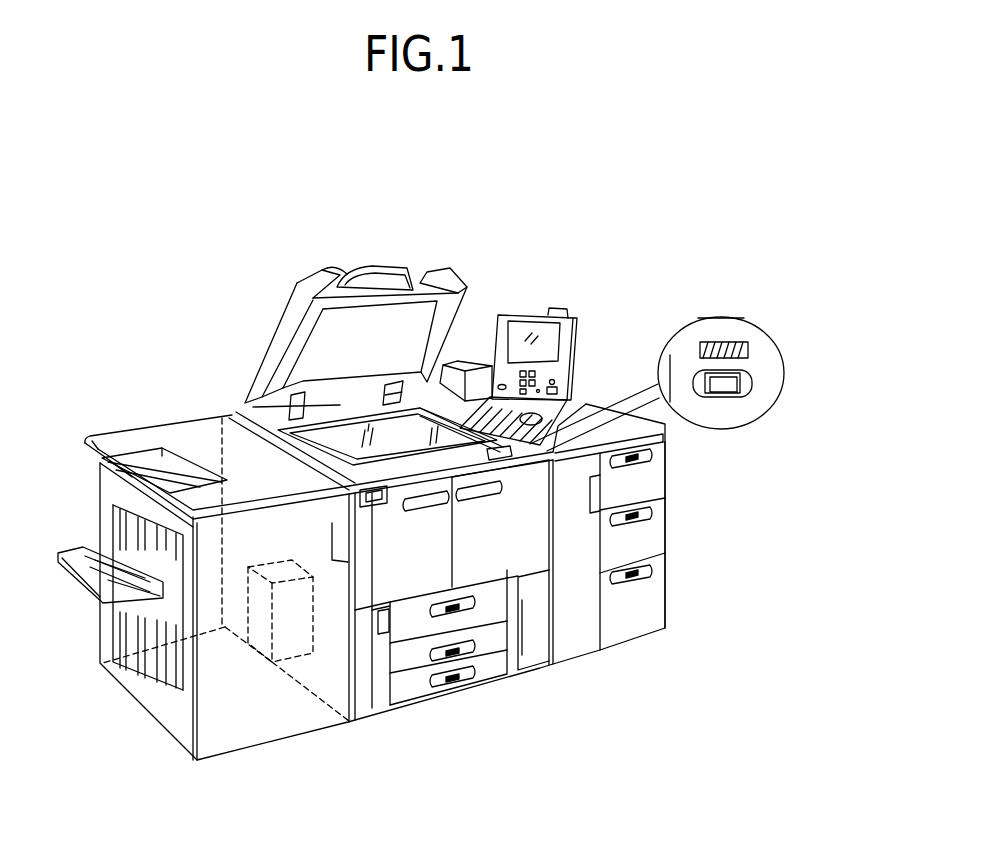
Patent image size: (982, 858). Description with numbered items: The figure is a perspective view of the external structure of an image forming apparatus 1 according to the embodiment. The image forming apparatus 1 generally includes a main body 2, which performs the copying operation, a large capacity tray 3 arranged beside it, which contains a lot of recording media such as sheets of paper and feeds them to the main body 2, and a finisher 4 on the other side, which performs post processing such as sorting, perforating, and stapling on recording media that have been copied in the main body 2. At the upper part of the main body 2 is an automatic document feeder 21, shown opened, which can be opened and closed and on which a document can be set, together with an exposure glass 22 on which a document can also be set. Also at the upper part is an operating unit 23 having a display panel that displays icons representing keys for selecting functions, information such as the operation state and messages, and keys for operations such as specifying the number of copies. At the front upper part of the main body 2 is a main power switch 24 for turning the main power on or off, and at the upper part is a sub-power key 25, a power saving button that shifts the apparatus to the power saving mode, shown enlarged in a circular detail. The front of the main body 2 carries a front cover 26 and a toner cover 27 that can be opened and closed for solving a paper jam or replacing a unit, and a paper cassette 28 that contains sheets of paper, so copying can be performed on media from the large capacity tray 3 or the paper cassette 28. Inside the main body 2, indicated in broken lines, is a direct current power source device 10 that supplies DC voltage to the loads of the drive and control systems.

The image forming apparatus 1 is at (428, 190).
The main body 2 is at (500, 674).
The large capacity tray 3 is at (637, 638).
The finisher 4 is at (250, 710).
The direct current power source device 10 is at (293, 633).
The automatic document feeder 21 is at (345, 272).
The exposure glass 22 is at (352, 430).
The operating unit 23 is at (527, 317).
The main power switch 24 is at (385, 504).
The sub-power key 25 is at (723, 395).
The front cover 26 is at (532, 532).
The toner cover 27 is at (371, 665).
The paper cassette 28 is at (520, 623).